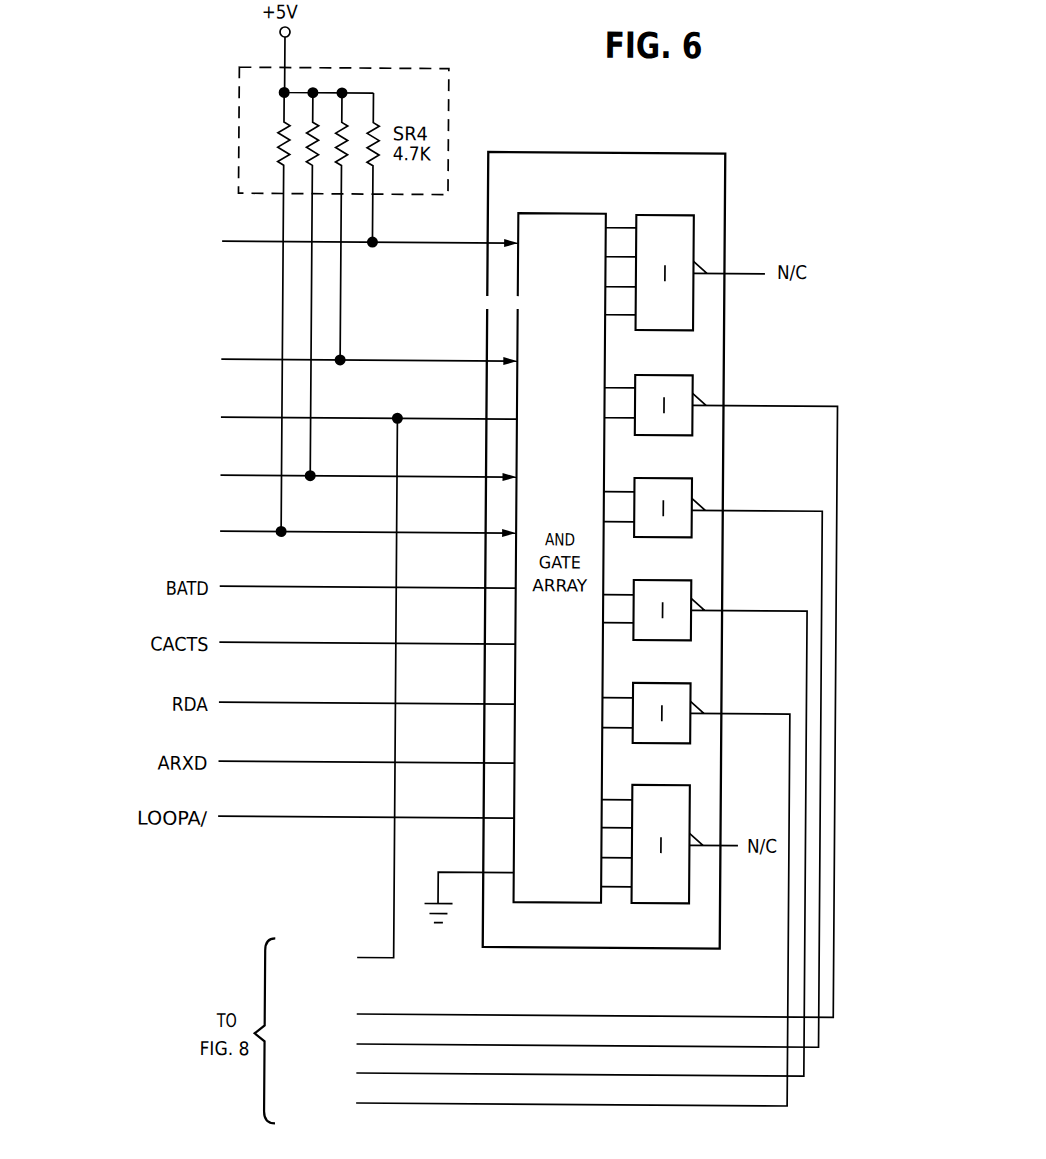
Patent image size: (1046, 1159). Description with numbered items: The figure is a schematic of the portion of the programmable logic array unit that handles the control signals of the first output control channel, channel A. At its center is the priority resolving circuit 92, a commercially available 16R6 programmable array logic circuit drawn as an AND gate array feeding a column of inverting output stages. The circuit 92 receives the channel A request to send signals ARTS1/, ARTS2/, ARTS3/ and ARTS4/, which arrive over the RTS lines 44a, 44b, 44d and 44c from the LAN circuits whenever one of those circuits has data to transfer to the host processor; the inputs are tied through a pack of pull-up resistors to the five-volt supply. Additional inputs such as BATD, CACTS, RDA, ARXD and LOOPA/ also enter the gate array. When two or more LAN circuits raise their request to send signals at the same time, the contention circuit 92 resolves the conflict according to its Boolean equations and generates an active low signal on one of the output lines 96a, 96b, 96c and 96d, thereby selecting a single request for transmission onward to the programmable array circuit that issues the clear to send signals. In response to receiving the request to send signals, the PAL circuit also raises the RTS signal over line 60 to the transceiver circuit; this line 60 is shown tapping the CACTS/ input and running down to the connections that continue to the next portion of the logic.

The RTS signal line 44a is at (257, 244).
The RTS signal line 44b is at (257, 362).
The RTS signal line 44c is at (257, 534).
The RTS signal line 44d is at (260, 478).
The RTS signal line 60 is at (260, 420).
The programmable array logic circuit 92 is at (605, 152).
The output line 96a is at (746, 403).
The output line 96b is at (746, 508).
The output line 96c is at (745, 608).
The output line 96d is at (745, 711).